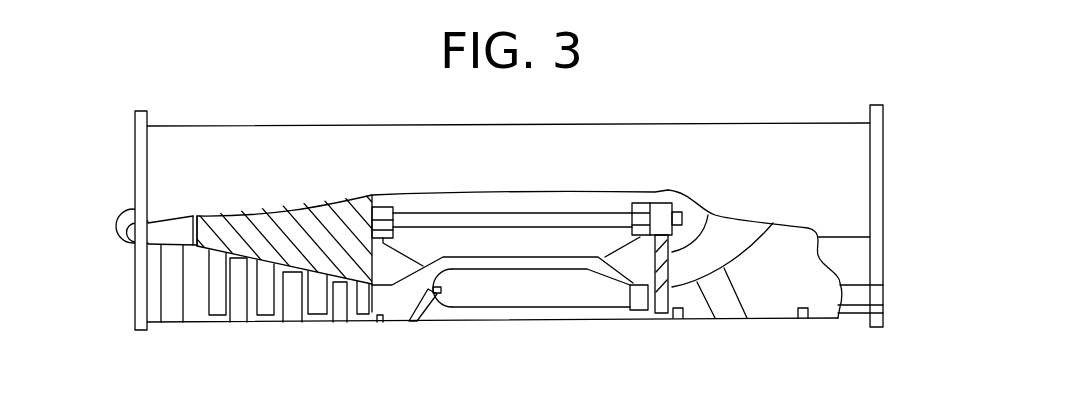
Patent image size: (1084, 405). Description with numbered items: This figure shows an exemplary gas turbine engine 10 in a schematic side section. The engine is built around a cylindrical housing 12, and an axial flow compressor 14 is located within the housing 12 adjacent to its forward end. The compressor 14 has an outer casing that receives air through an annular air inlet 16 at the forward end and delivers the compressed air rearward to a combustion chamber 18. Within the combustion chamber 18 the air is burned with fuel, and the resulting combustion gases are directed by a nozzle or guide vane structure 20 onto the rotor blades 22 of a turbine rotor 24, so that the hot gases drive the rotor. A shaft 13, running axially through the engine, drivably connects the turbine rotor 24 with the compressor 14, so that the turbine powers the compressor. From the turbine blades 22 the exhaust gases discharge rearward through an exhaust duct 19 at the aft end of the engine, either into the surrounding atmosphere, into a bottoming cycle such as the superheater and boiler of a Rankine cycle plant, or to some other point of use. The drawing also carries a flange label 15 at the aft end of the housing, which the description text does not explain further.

The gas turbine engine 10 is at (645, 92).
The cylindrical housing 12 is at (353, 125).
The shaft 13 is at (474, 213).
The axial flow compressor 14 is at (238, 212).
The aft flange 15 is at (883, 215).
The annular air inlet 16 is at (138, 283).
The combustion chamber 18 is at (455, 300).
The exhaust duct 19 is at (740, 297).
The nozzle or guide vane structure 20 is at (638, 302).
The rotor blades 22 is at (663, 296).
The turbine rotor 24 is at (708, 215).